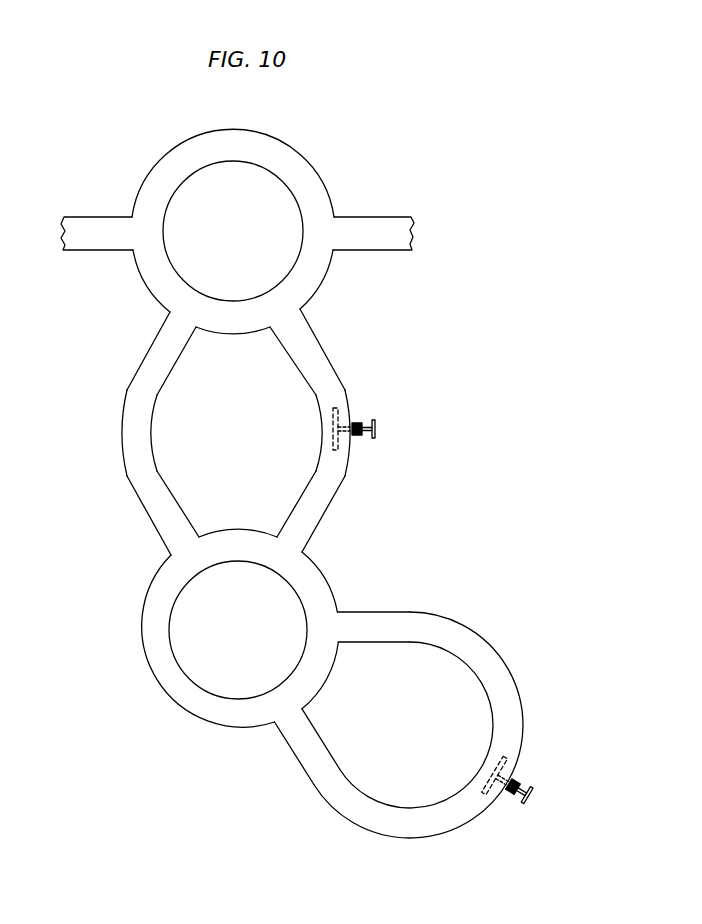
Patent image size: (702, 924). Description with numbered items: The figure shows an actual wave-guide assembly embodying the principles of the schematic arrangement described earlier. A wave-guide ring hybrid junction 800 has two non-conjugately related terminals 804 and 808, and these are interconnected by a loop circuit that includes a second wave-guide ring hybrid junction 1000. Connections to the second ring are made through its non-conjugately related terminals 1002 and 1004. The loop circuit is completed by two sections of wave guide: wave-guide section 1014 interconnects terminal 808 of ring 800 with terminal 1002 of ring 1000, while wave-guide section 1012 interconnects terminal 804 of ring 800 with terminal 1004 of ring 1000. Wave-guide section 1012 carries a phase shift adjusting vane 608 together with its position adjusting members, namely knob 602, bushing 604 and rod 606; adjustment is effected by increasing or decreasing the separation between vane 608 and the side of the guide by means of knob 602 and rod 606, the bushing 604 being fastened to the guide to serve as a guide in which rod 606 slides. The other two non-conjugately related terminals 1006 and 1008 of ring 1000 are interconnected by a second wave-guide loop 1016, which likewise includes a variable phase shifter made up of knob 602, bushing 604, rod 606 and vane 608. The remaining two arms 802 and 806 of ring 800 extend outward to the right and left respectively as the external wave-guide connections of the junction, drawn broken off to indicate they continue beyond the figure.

The wave-guide ring hybrid junction 800 is at (278, 141).
The right extension arm 802 is at (383, 215).
The terminal 804 is at (315, 337).
The left extension arm 806 is at (87, 217).
The terminal 808 is at (158, 336).
The second wave-guide ring hybrid junction 1000 is at (137, 636).
The terminal 1002 is at (148, 510).
The terminal 1004 is at (320, 519).
The terminal 1006 is at (288, 744).
The terminal 1008 is at (372, 612).
The wave-guide section 1012 is at (348, 455).
The wave-guide section 1014 is at (122, 430).
The second wave-guide loop 1016 is at (452, 832).
The knob 602 is at (376, 428).
The bushing 604 is at (355, 422).
The rod 606 is at (366, 432).
The phase shift adjusting vane 608 is at (338, 408).